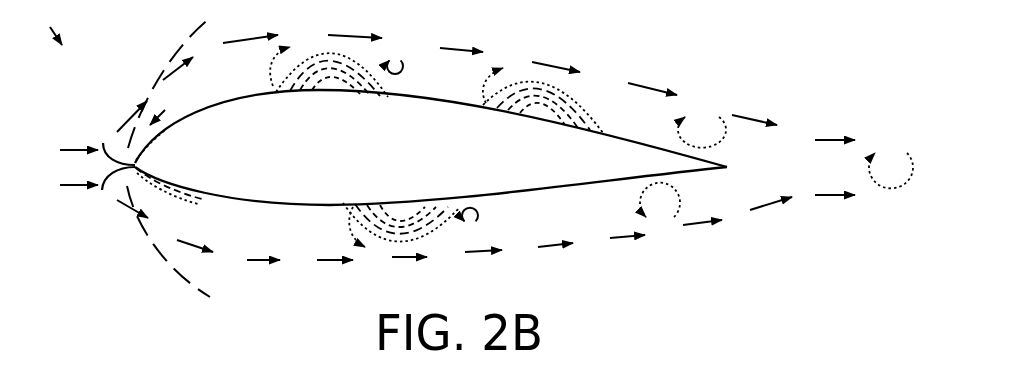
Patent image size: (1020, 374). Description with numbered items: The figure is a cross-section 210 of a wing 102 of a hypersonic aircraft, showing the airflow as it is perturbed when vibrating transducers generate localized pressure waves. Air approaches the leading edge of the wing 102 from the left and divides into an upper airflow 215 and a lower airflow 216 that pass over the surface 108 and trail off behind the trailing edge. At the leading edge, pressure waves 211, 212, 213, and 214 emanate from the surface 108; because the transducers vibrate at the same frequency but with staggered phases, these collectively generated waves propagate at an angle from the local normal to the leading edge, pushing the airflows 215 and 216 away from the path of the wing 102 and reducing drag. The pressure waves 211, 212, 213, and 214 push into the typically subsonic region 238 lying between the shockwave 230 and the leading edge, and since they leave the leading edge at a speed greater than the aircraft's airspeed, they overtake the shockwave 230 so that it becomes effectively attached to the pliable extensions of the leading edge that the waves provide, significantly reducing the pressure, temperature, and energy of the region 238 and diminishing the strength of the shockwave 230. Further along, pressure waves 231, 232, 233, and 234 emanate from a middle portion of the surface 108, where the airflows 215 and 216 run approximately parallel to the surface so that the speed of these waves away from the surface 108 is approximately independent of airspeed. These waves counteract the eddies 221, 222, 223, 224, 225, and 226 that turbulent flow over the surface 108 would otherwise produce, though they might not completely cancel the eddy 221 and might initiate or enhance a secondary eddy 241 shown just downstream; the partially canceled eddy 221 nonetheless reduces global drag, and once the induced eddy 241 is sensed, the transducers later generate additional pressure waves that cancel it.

The wing 102 is at (320, 161).
The surface 108 is at (268, 202).
The cross-section 210 is at (54, 23).
The pressure wave 211 is at (200, 203).
The pressure wave 212 is at (137, 190).
The pressure wave 213 is at (115, 193).
The pressure wave 214 is at (115, 133).
The airflow 215 is at (245, 38).
The airflow 216 is at (247, 261).
The eddy 221 is at (305, 67).
The eddy 222 is at (380, 253).
The eddy 223 is at (517, 63).
The eddy 224 is at (670, 223).
The eddy 225 is at (713, 111).
The eddy 226 is at (903, 147).
The shockwave 230 is at (192, 34).
The pressure wave 231 is at (285, 79).
The pressure wave 232 is at (280, 83).
The pressure wave 233 is at (292, 92).
The pressure wave 234 is at (313, 92).
The region 238 is at (168, 106).
The secondary eddy 241 is at (397, 58).